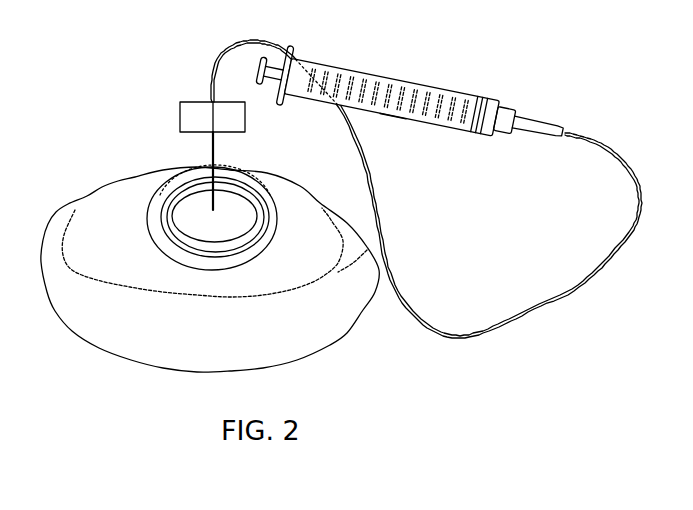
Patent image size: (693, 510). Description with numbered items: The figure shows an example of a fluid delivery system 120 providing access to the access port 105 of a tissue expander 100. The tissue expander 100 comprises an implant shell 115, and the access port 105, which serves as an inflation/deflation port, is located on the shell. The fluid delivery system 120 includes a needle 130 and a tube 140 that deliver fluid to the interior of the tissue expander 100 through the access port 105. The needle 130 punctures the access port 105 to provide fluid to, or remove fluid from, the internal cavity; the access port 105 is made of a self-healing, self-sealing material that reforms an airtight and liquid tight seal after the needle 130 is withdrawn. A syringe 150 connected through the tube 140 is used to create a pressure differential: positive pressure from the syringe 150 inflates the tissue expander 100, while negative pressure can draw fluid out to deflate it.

The tissue expander 100 is at (226, 245).
The access port 105 is at (212, 171).
The implant shell 115 is at (210, 269).
The fluid delivery system 120 is at (471, 97).
The needle 130 is at (240, 200).
The tube 140 is at (378, 213).
The syringe 150 is at (393, 116).